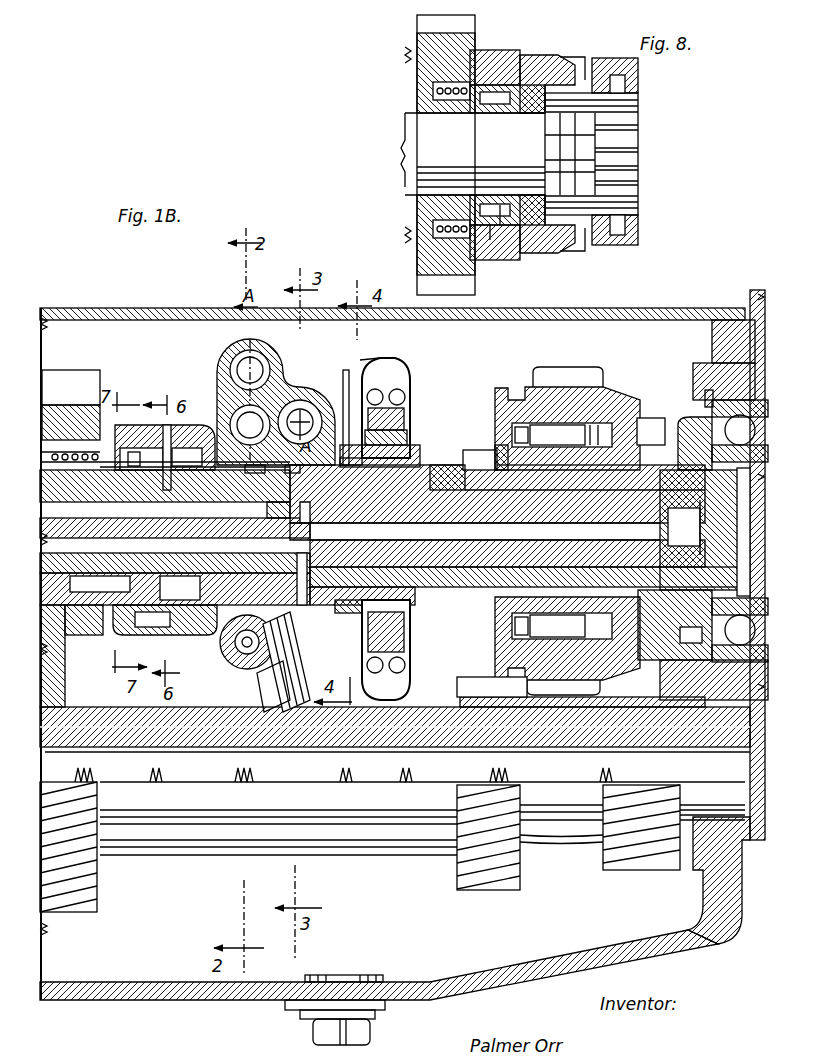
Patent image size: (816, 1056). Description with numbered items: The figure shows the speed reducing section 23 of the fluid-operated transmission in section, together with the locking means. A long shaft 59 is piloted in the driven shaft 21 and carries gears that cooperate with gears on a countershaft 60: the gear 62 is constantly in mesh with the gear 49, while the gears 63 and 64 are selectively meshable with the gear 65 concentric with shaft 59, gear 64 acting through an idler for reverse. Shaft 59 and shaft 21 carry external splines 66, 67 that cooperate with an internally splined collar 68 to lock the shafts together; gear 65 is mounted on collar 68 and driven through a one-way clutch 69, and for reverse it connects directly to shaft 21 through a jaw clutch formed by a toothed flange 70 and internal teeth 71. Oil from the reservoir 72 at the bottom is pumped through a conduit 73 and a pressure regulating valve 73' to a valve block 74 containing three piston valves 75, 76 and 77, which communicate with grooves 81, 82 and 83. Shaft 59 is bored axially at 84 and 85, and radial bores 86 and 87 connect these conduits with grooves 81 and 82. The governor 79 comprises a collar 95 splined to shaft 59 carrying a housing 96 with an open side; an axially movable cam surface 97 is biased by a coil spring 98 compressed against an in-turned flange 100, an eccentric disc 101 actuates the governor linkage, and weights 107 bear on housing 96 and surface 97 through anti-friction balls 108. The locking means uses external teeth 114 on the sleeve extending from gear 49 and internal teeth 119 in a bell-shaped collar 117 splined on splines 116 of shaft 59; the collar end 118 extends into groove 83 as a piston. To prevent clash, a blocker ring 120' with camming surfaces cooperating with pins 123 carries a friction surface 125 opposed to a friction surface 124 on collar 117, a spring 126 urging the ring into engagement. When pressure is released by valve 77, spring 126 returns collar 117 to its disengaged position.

In FIG. 1B, the speed reducing section 23 is at (160, 330).
In FIG. 8, the gear 49 is at (418, 42).
In FIG. 1B, the gear 49 is at (72, 400).
In FIG. 8, the ring 120' is at (503, 137).
In FIG. 1B, the ring 120' is at (165, 408).
In FIG. 8, the external teeth 114 is at (482, 292).
In FIG. 1B, the external teeth 114 is at (145, 455).
In FIG. 8, the external splines 116 is at (582, 147).
In FIG. 1B, the external splines 116 is at (190, 428).
In FIG. 8, the spring 126 is at (433, 92).
In FIG. 1B, the spring 126 is at (71, 432).
In FIG. 1B, the piston valve 76 is at (240, 350).
In FIG. 1B, the valve block 74 is at (283, 388).
In FIG. 1B, the piston valve 77 is at (240, 415).
In FIG. 1B, the piston valve 75 is at (305, 407).
In FIG. 1B, the eccentric disc 101 is at (345, 370).
In FIG. 1B, the cam surface 97 is at (378, 366).
In FIG. 1B, the housing 96 is at (402, 388).
In FIG. 1B, the governor 79 is at (410, 405).
In FIG. 1B, the coil spring 98 is at (407, 424).
In FIG. 1B, the collar 95 is at (407, 450).
In FIG. 1B, the internally splined collar 68 is at (492, 445).
In FIG. 1B, the external splines 67 is at (480, 465).
In FIG. 1B, the external splines 66 is at (430, 470).
In FIG. 1B, the one-way clutch 69 is at (556, 435).
In FIG. 1B, the gear 65 is at (600, 400).
In FIG. 1B, the toothed flange 70 is at (690, 420).
In FIG. 1B, the internal teeth 71 is at (654, 431).
In FIG. 8, the groove 83 is at (615, 243).
In FIG. 1B, the groove 83 is at (165, 481).
In FIG. 1B, the radial bore 87 is at (301, 502).
In FIG. 1B, the groove 81 is at (317, 513).
In FIG. 1B, the in-turned flange 100 is at (497, 494).
In FIG. 8, the long shaft 59 is at (425, 132).
In FIG. 1B, the long shaft 59 is at (525, 541).
In FIG. 1B, the driven shaft 21 is at (705, 532).
In FIG. 1B, the pins 123 is at (112, 495).
In FIG. 1B, the axial bore 85 is at (165, 495).
In FIG. 1B, the end of collar 118 is at (250, 511).
In FIG. 1B, the axial bore 84 is at (175, 554).
In FIG. 1B, the groove 82 is at (275, 592).
In FIG. 1B, the radial bore 86 is at (308, 575).
In FIG. 8, the internal teeth 119 is at (567, 58).
In FIG. 1B, the internal teeth 119 is at (170, 620).
In FIG. 8, the bell-shaped collar 117 is at (533, 60).
In FIG. 1B, the bell-shaped collar 117 is at (165, 628).
In FIG. 1B, the conduit 73 is at (277, 662).
In FIG. 1B, the pressure regulating valve 73' is at (247, 686).
In FIG. 1B, the weights 107 is at (410, 636).
In FIG. 1B, the anti-friction balls 108 is at (410, 663).
In FIG. 1B, the countershaft 60 is at (222, 782).
In FIG. 1B, the gear 62 is at (95, 905).
In FIG. 1B, the gear 63 is at (488, 893).
In FIG. 1B, the gear 64 is at (640, 873).
In FIG. 1B, the reservoir 72 is at (172, 990).
In FIG. 8, the friction surface 124 is at (528, 240).
In FIG. 8, the friction surface 125 is at (505, 232).